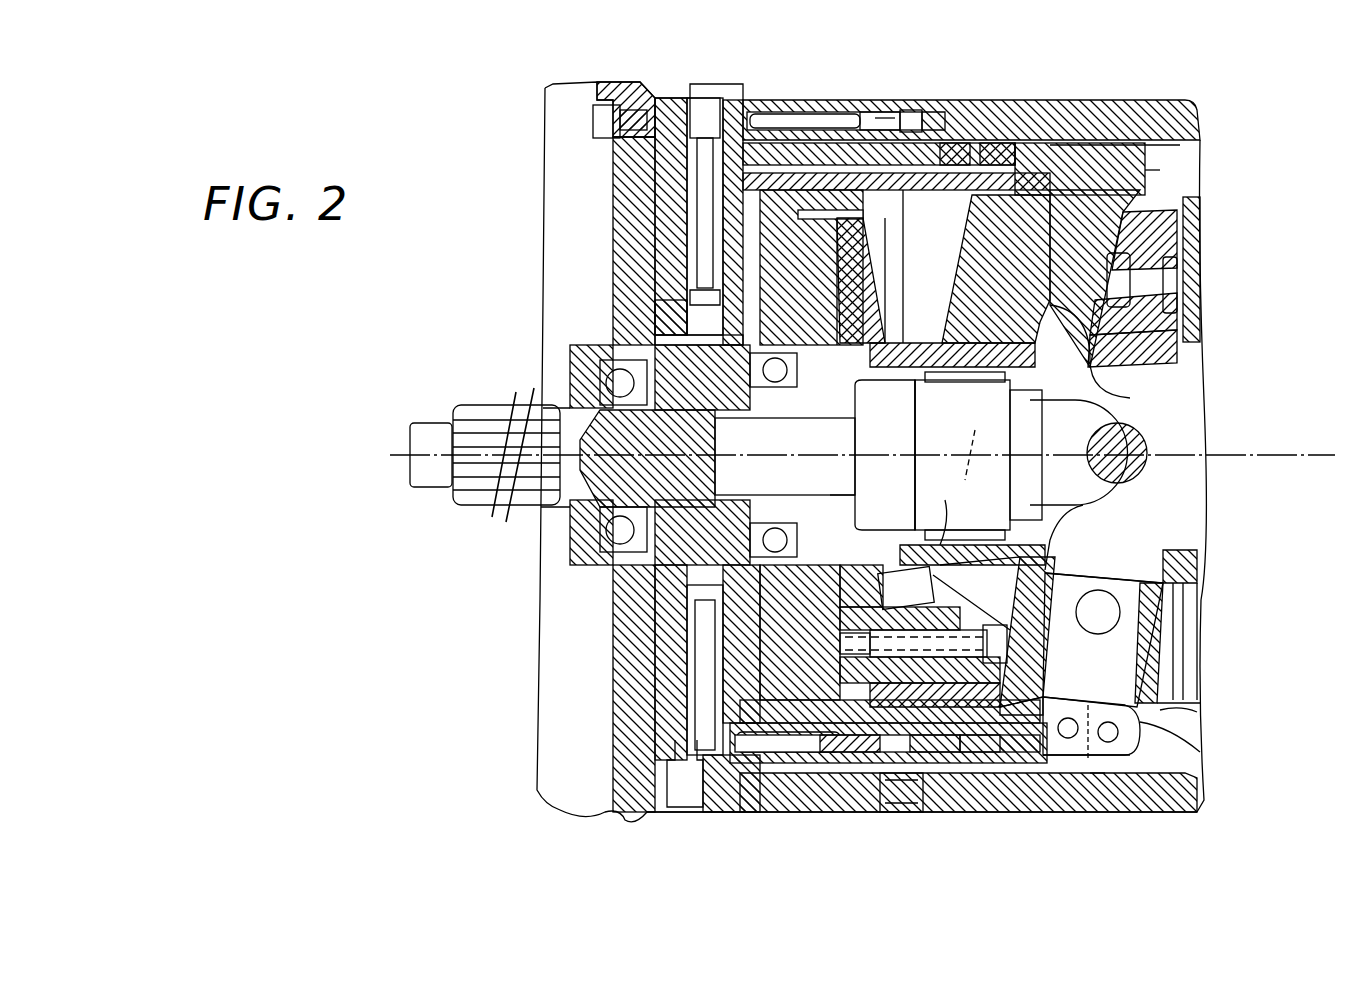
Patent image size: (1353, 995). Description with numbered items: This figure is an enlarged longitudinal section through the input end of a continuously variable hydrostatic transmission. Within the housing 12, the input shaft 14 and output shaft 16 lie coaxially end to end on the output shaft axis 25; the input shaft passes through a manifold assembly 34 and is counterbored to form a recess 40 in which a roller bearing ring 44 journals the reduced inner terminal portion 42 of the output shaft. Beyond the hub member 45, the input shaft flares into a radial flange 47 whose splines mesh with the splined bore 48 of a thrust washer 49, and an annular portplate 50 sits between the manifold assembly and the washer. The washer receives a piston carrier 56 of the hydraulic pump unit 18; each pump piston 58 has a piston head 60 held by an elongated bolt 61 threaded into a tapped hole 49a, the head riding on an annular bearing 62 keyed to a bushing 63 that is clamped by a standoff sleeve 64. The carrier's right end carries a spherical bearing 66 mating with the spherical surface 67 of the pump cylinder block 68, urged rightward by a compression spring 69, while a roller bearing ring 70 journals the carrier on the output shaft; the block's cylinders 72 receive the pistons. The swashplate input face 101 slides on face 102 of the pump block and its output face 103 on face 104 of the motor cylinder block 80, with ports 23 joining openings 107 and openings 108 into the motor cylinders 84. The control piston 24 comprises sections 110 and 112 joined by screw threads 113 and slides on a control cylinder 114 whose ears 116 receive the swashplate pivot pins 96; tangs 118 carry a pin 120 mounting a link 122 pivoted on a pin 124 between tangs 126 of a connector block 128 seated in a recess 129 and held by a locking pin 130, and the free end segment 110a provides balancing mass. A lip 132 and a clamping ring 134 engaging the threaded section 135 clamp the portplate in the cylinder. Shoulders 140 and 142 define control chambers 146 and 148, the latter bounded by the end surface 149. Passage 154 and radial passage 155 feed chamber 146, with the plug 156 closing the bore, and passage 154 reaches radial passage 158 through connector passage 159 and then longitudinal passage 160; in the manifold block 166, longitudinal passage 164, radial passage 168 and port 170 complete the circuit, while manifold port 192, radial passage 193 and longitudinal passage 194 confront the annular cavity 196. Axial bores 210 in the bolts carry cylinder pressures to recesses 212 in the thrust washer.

The housing 12 is at (1172, 108).
The input shaft 14 is at (428, 490).
The output shaft 16 is at (939, 455).
The hydraulic pump unit 18 is at (896, 167).
The ports 23 is at (1170, 278).
The control piston 24 is at (1062, 118).
The output shaft axis 25 is at (1300, 458).
The manifold assembly 34 is at (688, 80).
The cylindrical recess 40 is at (850, 497).
The inner terminal portion 42 is at (717, 458).
The roller bearing ring 44 is at (880, 283).
The hub member 45 is at (580, 372).
The radial flange 47 is at (858, 405).
The splined central bore 48 is at (870, 303).
The thrust washer 49 is at (995, 148).
The tapped hole 49a is at (790, 812).
The portplate 50 is at (905, 247).
The piston carrier 56 is at (934, 455).
The pump piston 58 is at (1000, 580).
The piston head 60 is at (936, 503).
The elongated bolt 61 is at (1060, 590).
The annular bearing 62 is at (985, 545).
The bushing 63 is at (1000, 765).
The standoff sleeve 64 is at (947, 632).
The annular spherical bearing 66 is at (962, 382).
The spherical surface 67 is at (1025, 342).
The pump cylinder block 68 is at (1080, 169).
The compression spring 69 is at (989, 447).
The roller bearing ring 70 is at (1040, 412).
The pump cylinders 72 is at (900, 812).
The motor cylinder block 80 is at (1198, 200).
The motor cylinders 84 is at (1197, 695).
The swashplate pivot pins 96 is at (1170, 470).
The input face 101 is at (1205, 347).
The face 102 is at (1205, 320).
The output face 103 is at (1210, 228).
The face 104 is at (1210, 258).
The openings 107 is at (1000, 668).
The openings 108 is at (1140, 635).
The rightward cylindrical section 110 is at (1075, 160).
The free end segment 110a is at (1150, 165).
The leftward cylindrical section 112 is at (850, 115).
The screw threads 113 is at (960, 150).
The control cylinder 114 is at (955, 812).
The ears 116 is at (1160, 428).
The tangs 118 is at (1090, 773).
The pin 120 is at (1062, 757).
The link 122 is at (1150, 808).
The pin 124 is at (1195, 760).
The tangs 126 is at (1118, 740).
The connector block 128 is at (1200, 600).
The recess 129 is at (1195, 670).
The transverse locking pin 130 is at (1130, 590).
The lip 132 is at (690, 222).
The clamping ring 134 is at (890, 218).
The internal threaded section 135 is at (840, 812).
The annular shoulder 140 is at (690, 172).
The annular shoulder 142 is at (875, 118).
The control chamber 146 is at (805, 115).
The control chamber 148 is at (905, 100).
The input end surface 149 is at (925, 125).
The fluid passage 154 is at (760, 812).
The radial passage 155 is at (845, 812).
The plug 156 is at (705, 812).
The radial passage 158 is at (690, 680).
The connector passage 159 is at (690, 742).
The longitudinal passage 160 is at (690, 645).
The longitudinal passage 164 is at (665, 602).
The manifold block 166 is at (620, 290).
The radial passage 168 is at (680, 790).
The port 170 is at (597, 802).
The manifold port 192 is at (745, 100).
The radial passage 193 is at (695, 185).
The longitudinal passage 194 is at (685, 300).
The annular cavity 196 is at (670, 262).
The axial bores 210 is at (1010, 645).
The recesses 212 is at (700, 720).